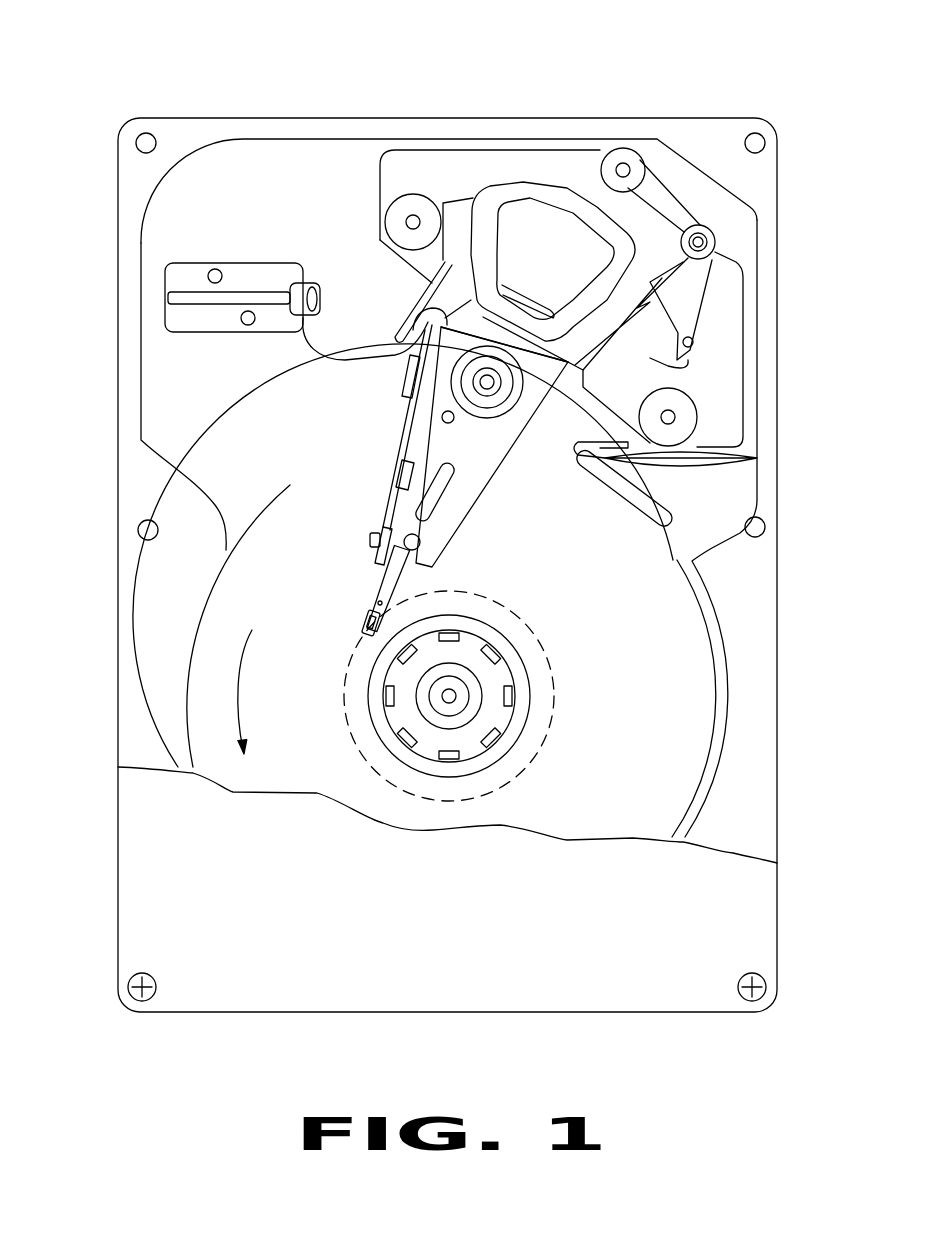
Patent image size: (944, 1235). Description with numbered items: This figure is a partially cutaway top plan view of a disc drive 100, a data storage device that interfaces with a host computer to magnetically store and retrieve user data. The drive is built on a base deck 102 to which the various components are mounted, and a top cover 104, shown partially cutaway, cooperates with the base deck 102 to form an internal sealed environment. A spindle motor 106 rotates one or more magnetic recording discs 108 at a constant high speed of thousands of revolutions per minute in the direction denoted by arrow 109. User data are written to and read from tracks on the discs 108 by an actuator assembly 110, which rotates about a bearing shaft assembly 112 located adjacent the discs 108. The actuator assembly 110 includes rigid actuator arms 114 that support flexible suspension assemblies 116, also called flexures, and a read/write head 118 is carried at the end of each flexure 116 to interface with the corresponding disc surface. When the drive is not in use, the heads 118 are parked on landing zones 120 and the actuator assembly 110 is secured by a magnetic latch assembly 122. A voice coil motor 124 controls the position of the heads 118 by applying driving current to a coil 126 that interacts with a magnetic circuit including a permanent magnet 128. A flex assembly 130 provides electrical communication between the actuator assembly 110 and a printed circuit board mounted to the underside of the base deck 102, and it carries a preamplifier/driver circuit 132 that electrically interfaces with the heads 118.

The disc drive 100 is at (247, 83).
The base deck 102 is at (175, 388).
The top cover 104 is at (165, 835).
The spindle motor 106 is at (480, 688).
The magnetic recording discs 108 is at (690, 708).
The arrow 109 is at (233, 683).
The actuator assembly 110 is at (527, 442).
The bearing shaft assembly 112 is at (490, 388).
The actuator arms 114 is at (448, 510).
The flexible suspension assemblies 116 is at (383, 582).
The read/write head 118 is at (365, 620).
The landing zones 120 is at (540, 757).
The magnetic latch assembly 122 is at (700, 290).
The voice coil motor 124 is at (563, 165).
The coil 126 is at (507, 190).
The permanent magnet 128 is at (583, 381).
The flex assembly 130 is at (330, 372).
The preamplifier/driver circuit 132 is at (400, 402).